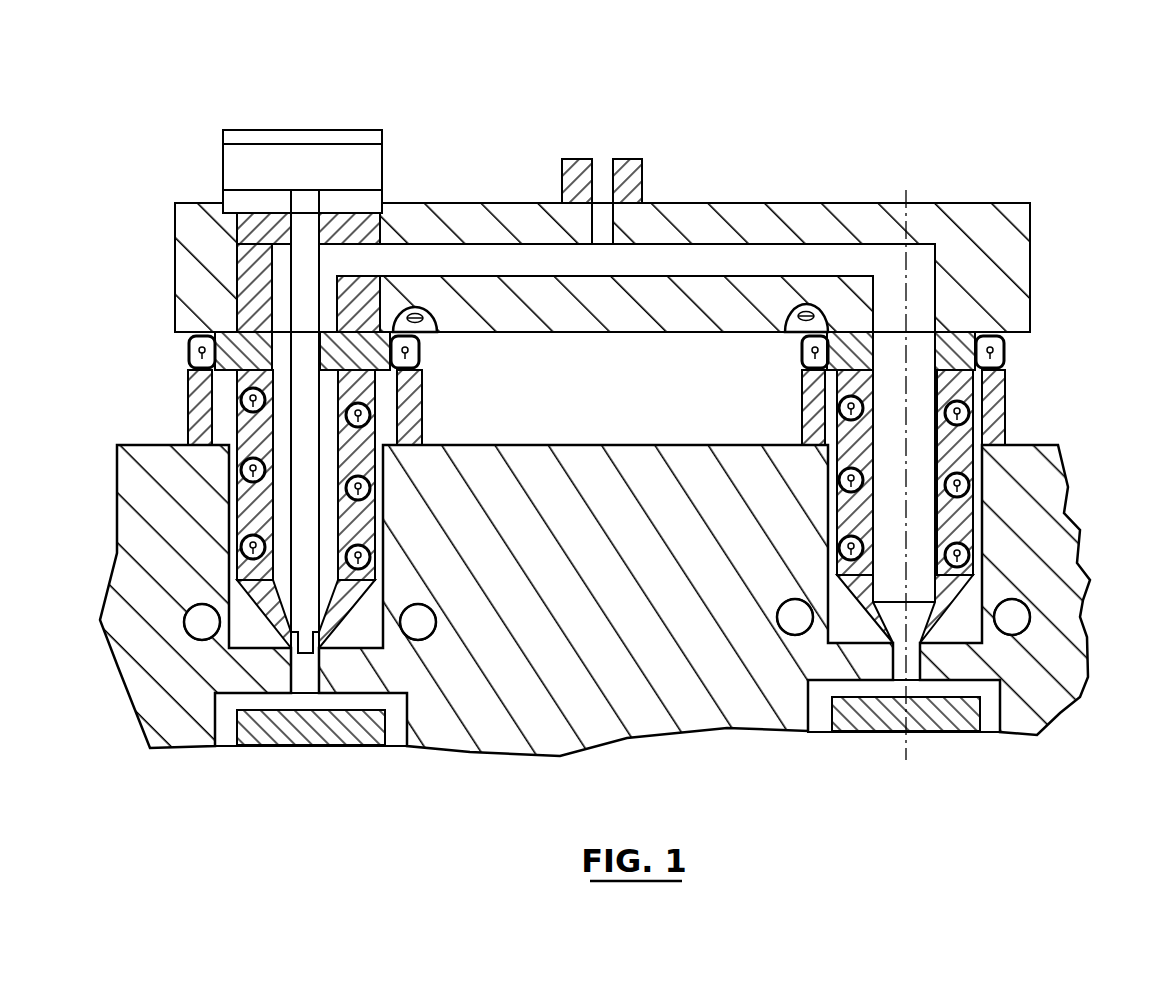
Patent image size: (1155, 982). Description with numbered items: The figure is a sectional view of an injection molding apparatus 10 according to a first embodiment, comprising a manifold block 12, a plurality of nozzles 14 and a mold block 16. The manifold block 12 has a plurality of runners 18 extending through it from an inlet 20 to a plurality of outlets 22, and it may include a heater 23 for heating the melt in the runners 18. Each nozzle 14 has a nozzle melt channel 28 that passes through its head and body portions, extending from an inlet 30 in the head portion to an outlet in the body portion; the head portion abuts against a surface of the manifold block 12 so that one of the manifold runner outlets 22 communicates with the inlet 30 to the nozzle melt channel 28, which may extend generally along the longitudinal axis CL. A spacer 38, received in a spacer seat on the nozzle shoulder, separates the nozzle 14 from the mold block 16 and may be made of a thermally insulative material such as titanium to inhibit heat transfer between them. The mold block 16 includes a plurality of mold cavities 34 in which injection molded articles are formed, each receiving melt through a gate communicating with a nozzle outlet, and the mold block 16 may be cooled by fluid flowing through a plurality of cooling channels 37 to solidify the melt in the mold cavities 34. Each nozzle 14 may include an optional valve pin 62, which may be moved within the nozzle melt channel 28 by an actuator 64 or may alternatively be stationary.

The injection molding apparatus 10 is at (995, 112).
The manifold block 12 is at (993, 203).
The nozzle 14 is at (651, 430).
The mold block 16 is at (616, 592).
The runner 18 is at (730, 260).
The inlet 20 is at (603, 158).
The outlet 22 is at (937, 343).
The heater 23 is at (440, 333).
The nozzle melt channel 28 is at (393, 457).
The inlet 30 is at (885, 330).
The mold cavity 34 is at (405, 716).
The cooling channel 37 is at (777, 618).
The spacer 38 is at (410, 387).
The valve pin 62 is at (312, 530).
The actuator 64 is at (383, 160).